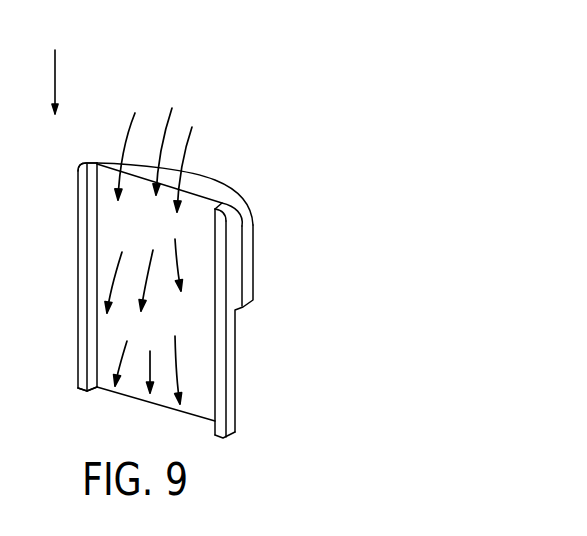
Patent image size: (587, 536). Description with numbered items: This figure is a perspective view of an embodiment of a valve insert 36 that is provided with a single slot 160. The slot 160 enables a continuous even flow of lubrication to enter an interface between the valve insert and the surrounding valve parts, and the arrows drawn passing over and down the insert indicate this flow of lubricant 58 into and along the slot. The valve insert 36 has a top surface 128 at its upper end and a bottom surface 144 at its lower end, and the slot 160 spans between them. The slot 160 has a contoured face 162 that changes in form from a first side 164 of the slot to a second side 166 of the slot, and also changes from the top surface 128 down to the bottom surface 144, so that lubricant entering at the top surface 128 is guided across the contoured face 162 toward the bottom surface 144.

The airflow direction 58 is at (56, 78).
The valve insert 36 is at (312, 230).
The top surface 128 is at (203, 185).
The single slot 160 is at (70, 228).
The first side 164 is at (78, 283).
The contoured face 162 is at (110, 345).
The second side 166 is at (222, 346).
The bottom surface 144 is at (203, 422).